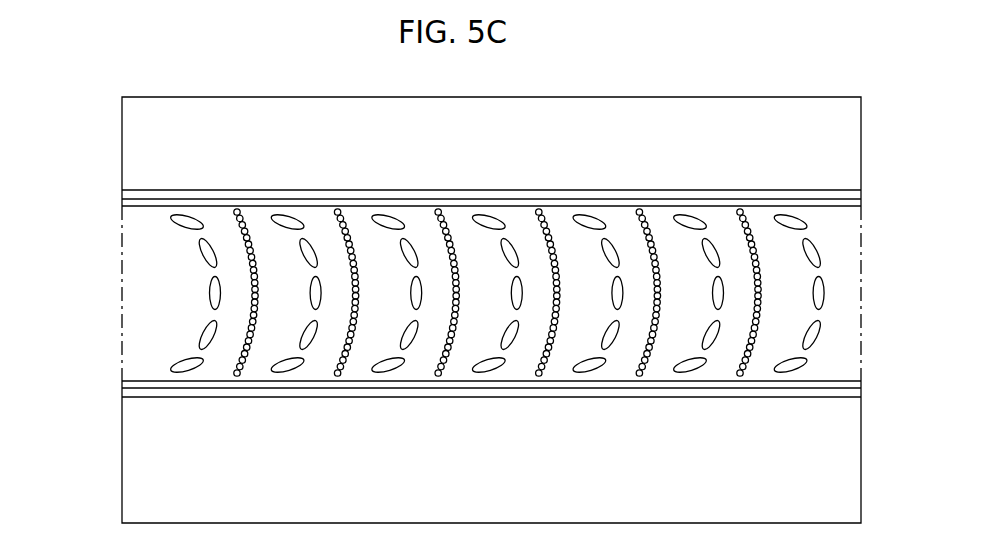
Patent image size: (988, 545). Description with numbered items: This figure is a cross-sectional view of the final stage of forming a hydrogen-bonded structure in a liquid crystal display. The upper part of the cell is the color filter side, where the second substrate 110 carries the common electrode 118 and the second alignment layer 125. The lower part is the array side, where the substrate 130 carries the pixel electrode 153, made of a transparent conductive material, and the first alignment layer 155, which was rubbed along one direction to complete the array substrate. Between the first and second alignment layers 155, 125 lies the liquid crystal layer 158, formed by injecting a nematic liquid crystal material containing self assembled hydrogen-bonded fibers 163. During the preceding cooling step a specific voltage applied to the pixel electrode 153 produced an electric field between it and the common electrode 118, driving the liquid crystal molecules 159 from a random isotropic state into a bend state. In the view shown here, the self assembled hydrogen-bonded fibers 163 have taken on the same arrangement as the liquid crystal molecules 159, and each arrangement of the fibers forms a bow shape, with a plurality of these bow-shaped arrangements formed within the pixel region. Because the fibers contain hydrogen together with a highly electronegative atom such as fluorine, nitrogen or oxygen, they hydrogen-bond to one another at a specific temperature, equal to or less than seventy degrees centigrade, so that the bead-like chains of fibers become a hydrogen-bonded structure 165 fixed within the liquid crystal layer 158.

The second substrate 110 is at (848, 152).
The common electrode 118 is at (614, 191).
The second alignment layer 125 is at (677, 204).
The substrate 130 is at (848, 500).
The pixel electrode 153 is at (449, 392).
The first alignment layer 155 is at (564, 383).
The liquid crystal layer 158 is at (132, 313).
The liquid crystal molecules 159 is at (204, 255).
The self assembled hydrogen-bonded fibers 163 is at (255, 345).
The hydrogen-bonded structure 165 is at (251, 362).